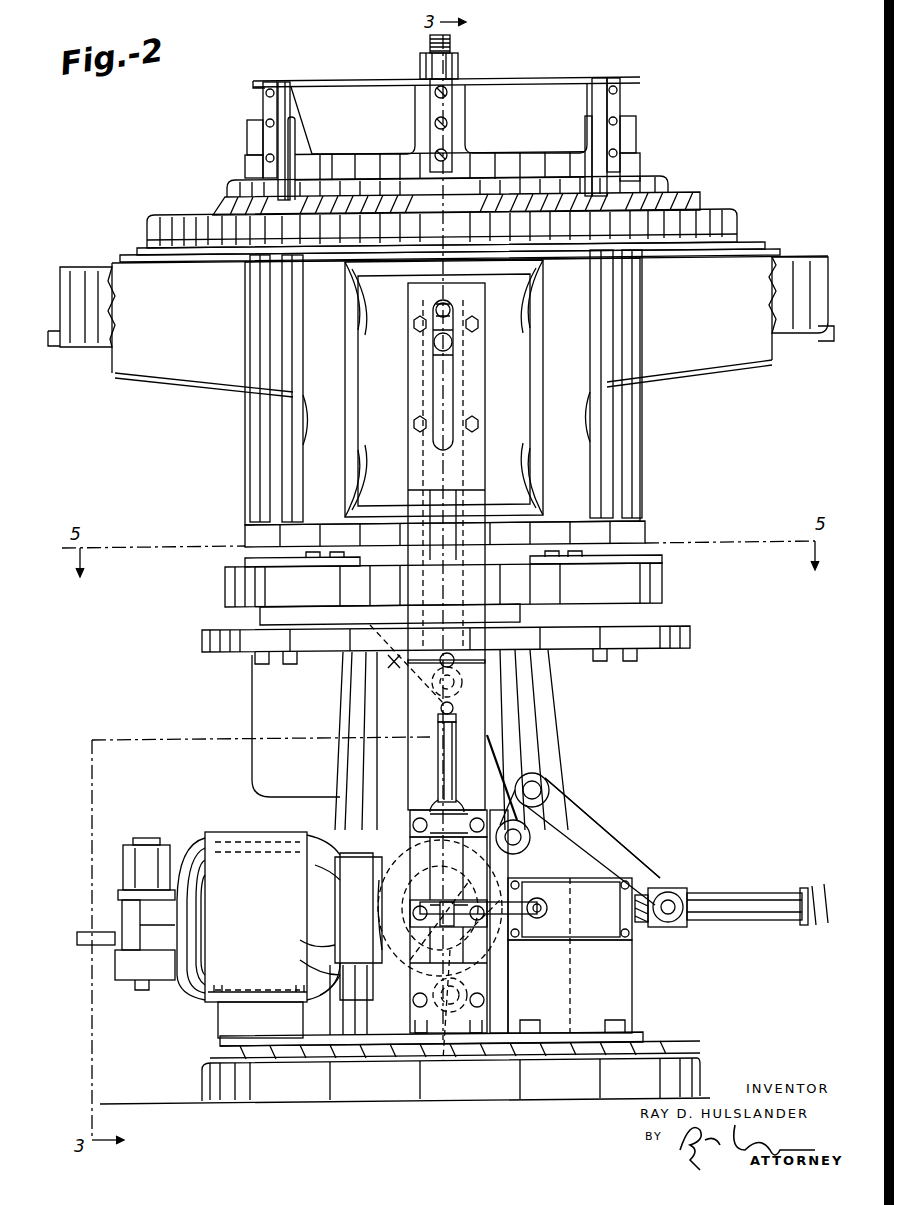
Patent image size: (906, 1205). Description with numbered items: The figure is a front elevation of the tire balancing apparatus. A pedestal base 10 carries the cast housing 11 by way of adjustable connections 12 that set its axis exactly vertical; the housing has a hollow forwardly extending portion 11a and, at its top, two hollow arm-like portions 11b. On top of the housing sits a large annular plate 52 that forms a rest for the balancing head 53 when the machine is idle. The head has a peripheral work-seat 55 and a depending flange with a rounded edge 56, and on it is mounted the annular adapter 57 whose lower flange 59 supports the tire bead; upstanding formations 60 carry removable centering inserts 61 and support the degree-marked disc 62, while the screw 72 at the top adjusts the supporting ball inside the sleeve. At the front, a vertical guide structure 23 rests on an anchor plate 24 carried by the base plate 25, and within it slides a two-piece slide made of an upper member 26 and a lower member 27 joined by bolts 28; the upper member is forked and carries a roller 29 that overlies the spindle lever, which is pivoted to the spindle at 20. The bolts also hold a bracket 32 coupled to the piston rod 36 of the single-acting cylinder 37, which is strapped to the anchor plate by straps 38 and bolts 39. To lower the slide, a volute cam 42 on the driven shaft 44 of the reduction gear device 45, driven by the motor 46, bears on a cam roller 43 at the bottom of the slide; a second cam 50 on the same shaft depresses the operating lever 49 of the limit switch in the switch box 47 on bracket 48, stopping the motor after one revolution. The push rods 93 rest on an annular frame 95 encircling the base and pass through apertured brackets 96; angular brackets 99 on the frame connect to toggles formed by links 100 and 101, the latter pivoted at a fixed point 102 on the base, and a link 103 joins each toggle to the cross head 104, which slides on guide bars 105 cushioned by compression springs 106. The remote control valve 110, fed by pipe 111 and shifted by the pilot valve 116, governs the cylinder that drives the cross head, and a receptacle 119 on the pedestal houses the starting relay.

The screw 72 is at (458, 48).
The flat plate or disc 62 is at (358, 79).
The upstanding formations 60 is at (284, 82).
The removable inserts 61 is at (266, 104).
The annular adapter 57 is at (508, 152).
The peripheral flange 59 is at (232, 186).
The balancing head 53 is at (652, 201).
The annular plate or work-seat 55 is at (728, 212).
The rounded flange edge 56 is at (138, 250).
The annular plate 52 is at (758, 246).
The frame or housing structure 11 is at (598, 470).
The forwardly extending portion 11a is at (505, 368).
The laterally extending arm-like portions 11b is at (132, 360).
The push rods 93 is at (285, 408).
The upper slide member 26 is at (486, 600).
The pivotal connection 20 is at (434, 345).
The roller 29 is at (436, 310).
The adjustable connections 12 is at (250, 547).
The apertured brackets 96 is at (246, 572).
The annular frame 95 is at (215, 654).
The pedestal base 10 is at (553, 728).
The receptacle 119 is at (252, 710).
The angular brackets 99 is at (407, 665).
The vertical guide structure 23 is at (410, 706).
The bolts 28 is at (455, 660).
The bracket 32 is at (456, 718).
The piston rod 36 is at (440, 740).
The lower slide member 27 is at (440, 760).
The straps 38 is at (432, 796).
The bolts 39 is at (418, 816).
The link 100 is at (500, 775).
The link 101 is at (552, 820).
The link 103 is at (620, 852).
The cam 50 is at (500, 958).
The operating lever 49 is at (535, 920).
The driven shaft 44 is at (410, 910).
The fluid pressure operated cylinder 37 is at (400, 880).
The volute cam 42 is at (405, 962).
The cam roller 43 is at (412, 996).
The anchor plate 24 is at (415, 1015).
The switch box 47 is at (605, 926).
The bracket 48 is at (628, 986).
The base plate 25 is at (640, 1038).
The fixed pivot point 102 is at (452, 1050).
The motor 46 is at (232, 838).
The reduction gear device 45 is at (340, 850).
The solenoid-operated pilot valve 116 is at (146, 844).
The remote control valve 110 is at (126, 975).
The pipe 111 is at (80, 930).
The cross head 104 is at (684, 888).
The guide bars 105 is at (740, 895).
The compression springs 106 is at (645, 925).